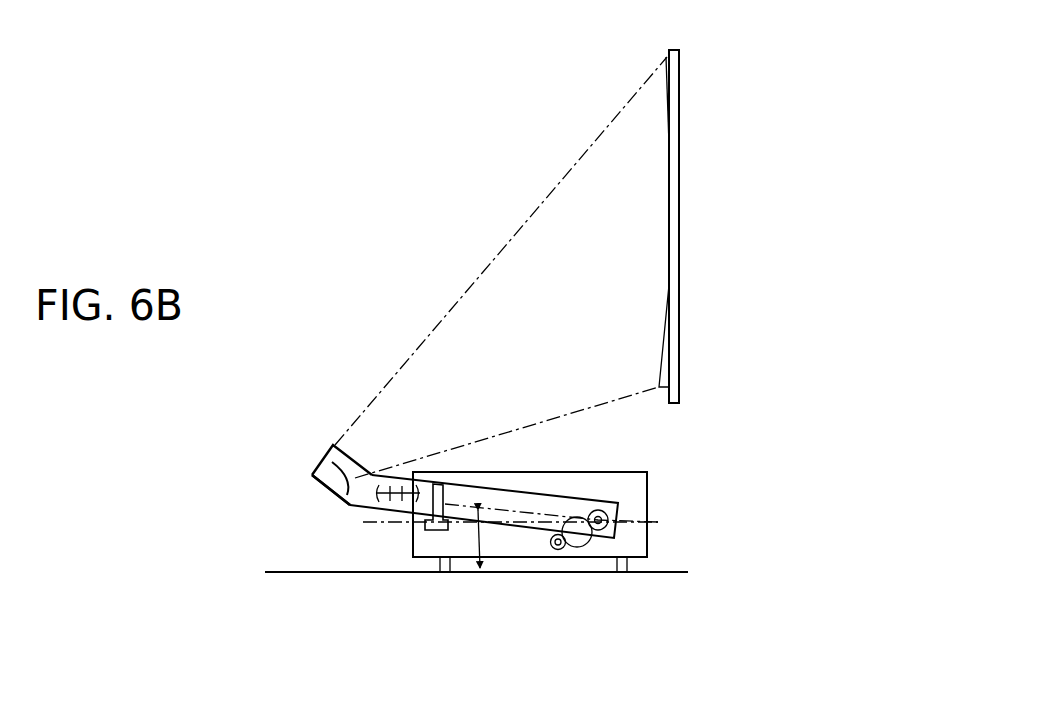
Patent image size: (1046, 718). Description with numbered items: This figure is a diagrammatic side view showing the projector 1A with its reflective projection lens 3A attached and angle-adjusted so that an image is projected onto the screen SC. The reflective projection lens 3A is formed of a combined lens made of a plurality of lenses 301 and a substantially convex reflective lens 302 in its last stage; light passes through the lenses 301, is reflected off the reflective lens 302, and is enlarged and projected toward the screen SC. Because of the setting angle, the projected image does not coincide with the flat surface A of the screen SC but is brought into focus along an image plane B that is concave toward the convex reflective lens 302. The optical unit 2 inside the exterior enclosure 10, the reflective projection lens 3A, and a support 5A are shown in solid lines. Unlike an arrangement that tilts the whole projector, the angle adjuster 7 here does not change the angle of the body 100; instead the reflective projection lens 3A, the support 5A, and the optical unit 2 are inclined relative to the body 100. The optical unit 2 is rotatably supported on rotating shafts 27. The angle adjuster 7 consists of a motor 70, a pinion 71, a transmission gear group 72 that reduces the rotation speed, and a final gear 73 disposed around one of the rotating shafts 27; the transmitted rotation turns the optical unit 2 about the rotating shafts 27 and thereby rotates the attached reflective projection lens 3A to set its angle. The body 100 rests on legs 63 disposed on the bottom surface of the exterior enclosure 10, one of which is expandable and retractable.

The projector 1A is at (495, 523).
The body 100 is at (528, 472).
The exterior enclosure 10 is at (495, 535).
The optical unit 2 is at (488, 480).
The support 5A is at (445, 484).
The reflective projection lens 3A is at (311, 465).
The reflective lens 302 is at (333, 474).
The lenses 301 is at (350, 505).
The angle adjuster 7 is at (572, 593).
The motor 70 is at (550, 545).
The pinion 71 is at (571, 547).
The transmission gear group 72 is at (598, 531).
The final gear 73 is at (618, 575).
The rotating shaft 27 is at (647, 513).
The legs 63 is at (455, 572).
The screen SC is at (680, 152).
The flat surface A is at (670, 67).
The image plane B is at (665, 100).